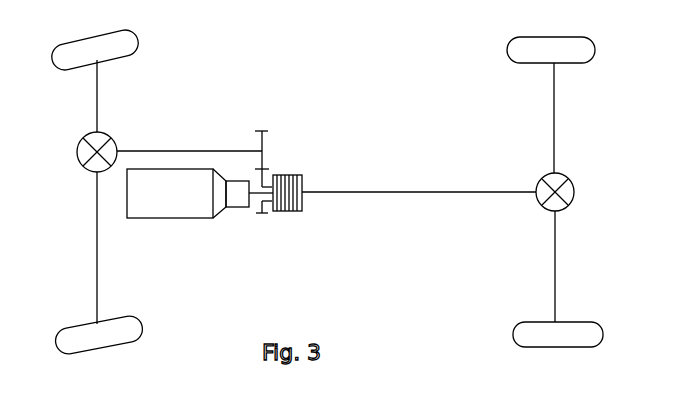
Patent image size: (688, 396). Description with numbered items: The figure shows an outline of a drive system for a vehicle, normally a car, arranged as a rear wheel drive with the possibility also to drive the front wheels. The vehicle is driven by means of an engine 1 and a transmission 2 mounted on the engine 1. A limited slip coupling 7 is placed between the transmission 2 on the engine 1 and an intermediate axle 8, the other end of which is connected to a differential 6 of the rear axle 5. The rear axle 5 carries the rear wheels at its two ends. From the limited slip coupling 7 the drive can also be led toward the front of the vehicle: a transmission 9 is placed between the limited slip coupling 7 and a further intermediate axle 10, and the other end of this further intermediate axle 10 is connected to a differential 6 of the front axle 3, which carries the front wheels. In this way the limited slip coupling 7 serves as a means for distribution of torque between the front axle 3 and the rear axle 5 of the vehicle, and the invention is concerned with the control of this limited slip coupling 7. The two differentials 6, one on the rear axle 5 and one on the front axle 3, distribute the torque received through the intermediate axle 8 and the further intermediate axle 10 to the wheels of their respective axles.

The engine 1 is at (168, 213).
The transmission 2 is at (237, 198).
The front axle 3 is at (97, 82).
The rear axle 5 is at (552, 122).
The differential 6 is at (77, 146).
The limited slip coupling 7 is at (302, 211).
The intermediate axle 8 is at (380, 192).
The transmission 9 is at (266, 160).
The further intermediate axle 10 is at (187, 152).